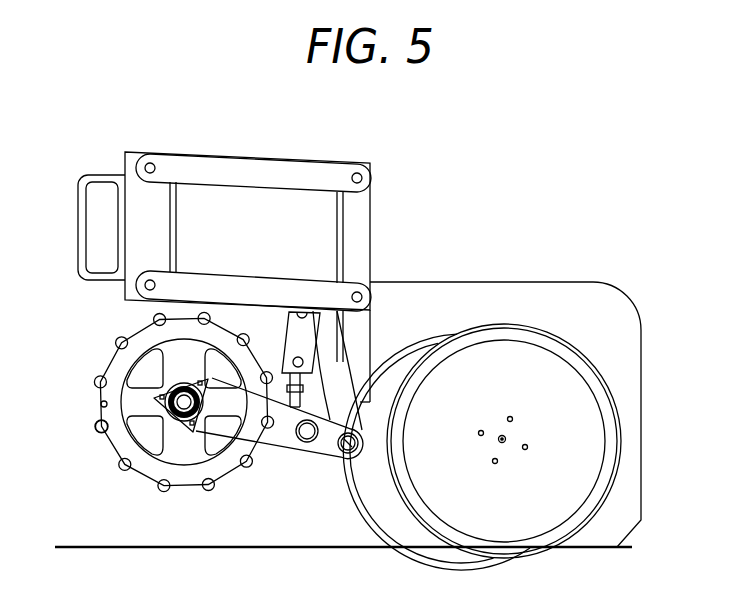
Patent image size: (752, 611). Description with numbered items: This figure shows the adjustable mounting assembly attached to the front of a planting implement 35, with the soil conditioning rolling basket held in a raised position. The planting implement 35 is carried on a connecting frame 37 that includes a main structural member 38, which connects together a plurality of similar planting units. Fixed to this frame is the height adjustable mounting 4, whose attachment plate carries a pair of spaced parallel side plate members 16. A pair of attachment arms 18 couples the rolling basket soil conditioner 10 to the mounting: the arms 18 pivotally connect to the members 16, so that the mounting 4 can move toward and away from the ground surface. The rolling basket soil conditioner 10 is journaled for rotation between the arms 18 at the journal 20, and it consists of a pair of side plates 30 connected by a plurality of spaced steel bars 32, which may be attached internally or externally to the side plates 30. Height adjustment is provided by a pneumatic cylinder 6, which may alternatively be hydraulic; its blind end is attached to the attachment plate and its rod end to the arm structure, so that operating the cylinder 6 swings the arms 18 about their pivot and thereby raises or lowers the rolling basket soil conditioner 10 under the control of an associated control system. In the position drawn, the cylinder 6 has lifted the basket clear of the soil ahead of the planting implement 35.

The height adjustable mounting 4 is at (318, 468).
The pneumatic cylinder 6 is at (293, 337).
The rolling basket soil conditioner 10 is at (94, 466).
The side plate members 16 is at (335, 371).
The attachment arms 18 is at (284, 430).
The journal for rotation 20 is at (184, 432).
The side plates 30 is at (110, 390).
The steel bars 32 is at (96, 426).
The planting implement 35 is at (600, 264).
The connecting frame 37 is at (294, 146).
The main structural member 38 is at (87, 175).